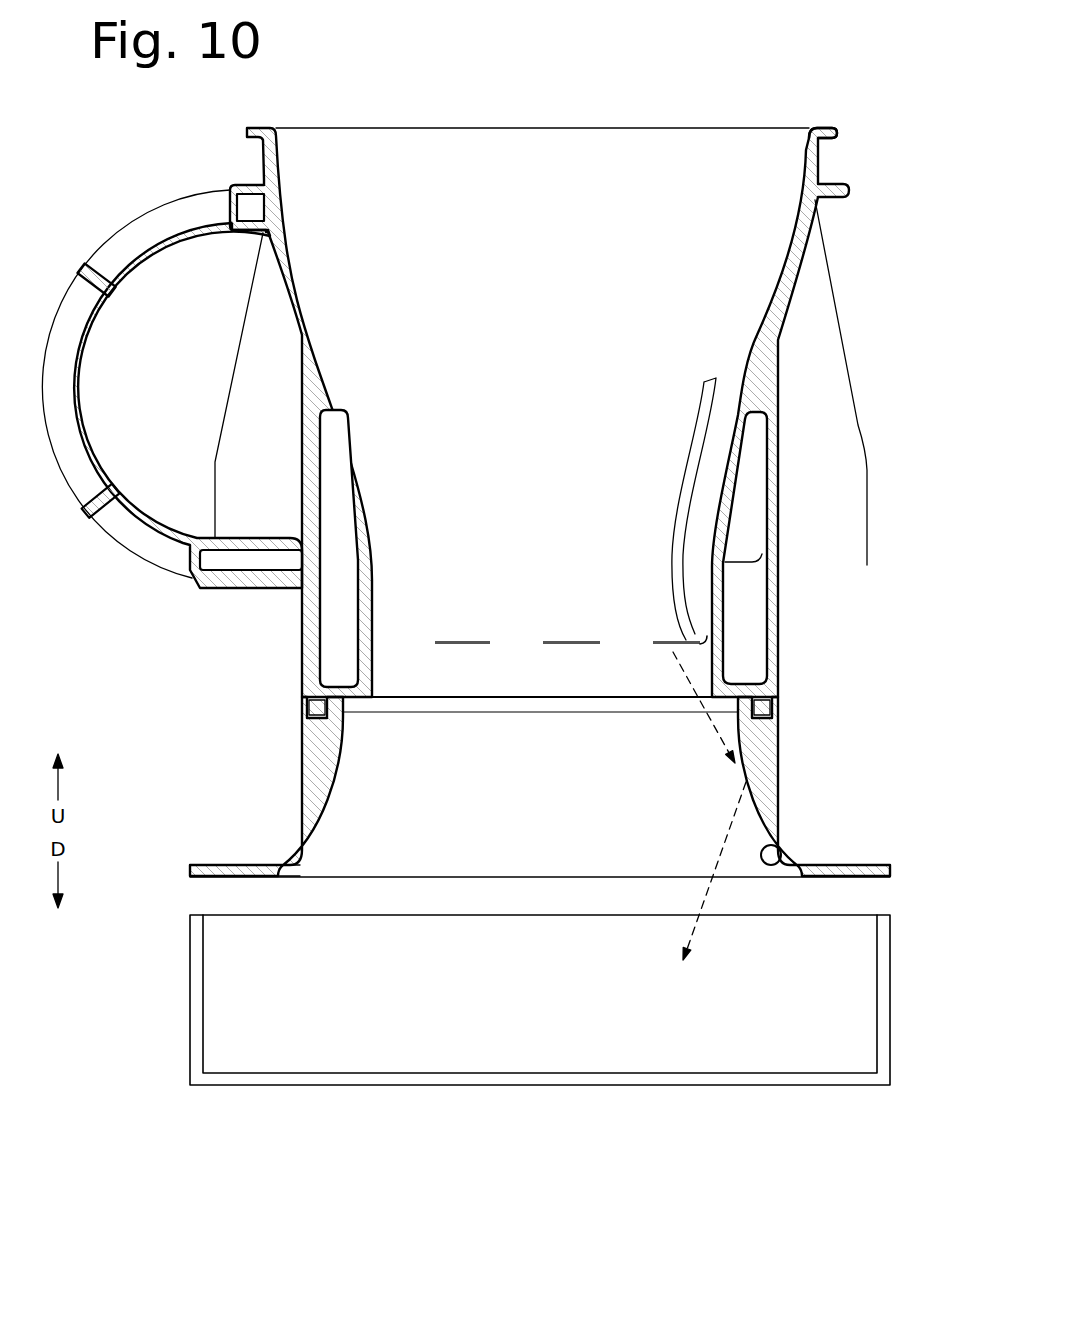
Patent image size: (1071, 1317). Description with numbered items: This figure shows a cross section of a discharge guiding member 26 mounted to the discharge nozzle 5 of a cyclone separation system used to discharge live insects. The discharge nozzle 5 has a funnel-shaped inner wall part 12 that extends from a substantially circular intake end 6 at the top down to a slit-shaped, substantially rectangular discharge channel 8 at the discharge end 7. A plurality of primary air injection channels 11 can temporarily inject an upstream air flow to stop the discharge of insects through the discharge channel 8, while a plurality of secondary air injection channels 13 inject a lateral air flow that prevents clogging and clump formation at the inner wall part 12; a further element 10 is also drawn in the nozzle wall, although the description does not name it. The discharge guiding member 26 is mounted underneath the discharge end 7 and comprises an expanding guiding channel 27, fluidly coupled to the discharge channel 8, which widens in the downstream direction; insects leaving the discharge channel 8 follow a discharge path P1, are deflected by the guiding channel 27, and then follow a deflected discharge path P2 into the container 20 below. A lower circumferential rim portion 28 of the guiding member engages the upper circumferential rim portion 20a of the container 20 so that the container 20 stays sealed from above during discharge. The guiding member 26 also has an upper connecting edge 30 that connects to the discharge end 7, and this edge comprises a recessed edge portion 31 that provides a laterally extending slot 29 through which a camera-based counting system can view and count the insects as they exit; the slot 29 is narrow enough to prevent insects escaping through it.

The discharge nozzle 5 is at (880, 288).
The intake end 6 is at (836, 130).
The discharge end 7 is at (773, 668).
The discharge channel 8 is at (540, 747).
The groove 10 is at (745, 638).
The primary air injection channels 11 is at (545, 642).
The inner wall part 12 is at (342, 410).
The secondary air injection channels 13 is at (700, 392).
The container 20 is at (500, 1035).
The upper circumferential rim portion 20a is at (192, 942).
The discharge guiding member 26 is at (810, 793).
The guiding channel 27 is at (777, 850).
The lower circumferential rim portion 28 is at (243, 878).
The laterally extending slot 29 is at (400, 708).
The upper connecting edge 30 is at (307, 726).
The recessed edge portion 31 is at (470, 714).
The discharge path P1 is at (722, 742).
The deflected discharge path P2 is at (690, 928).